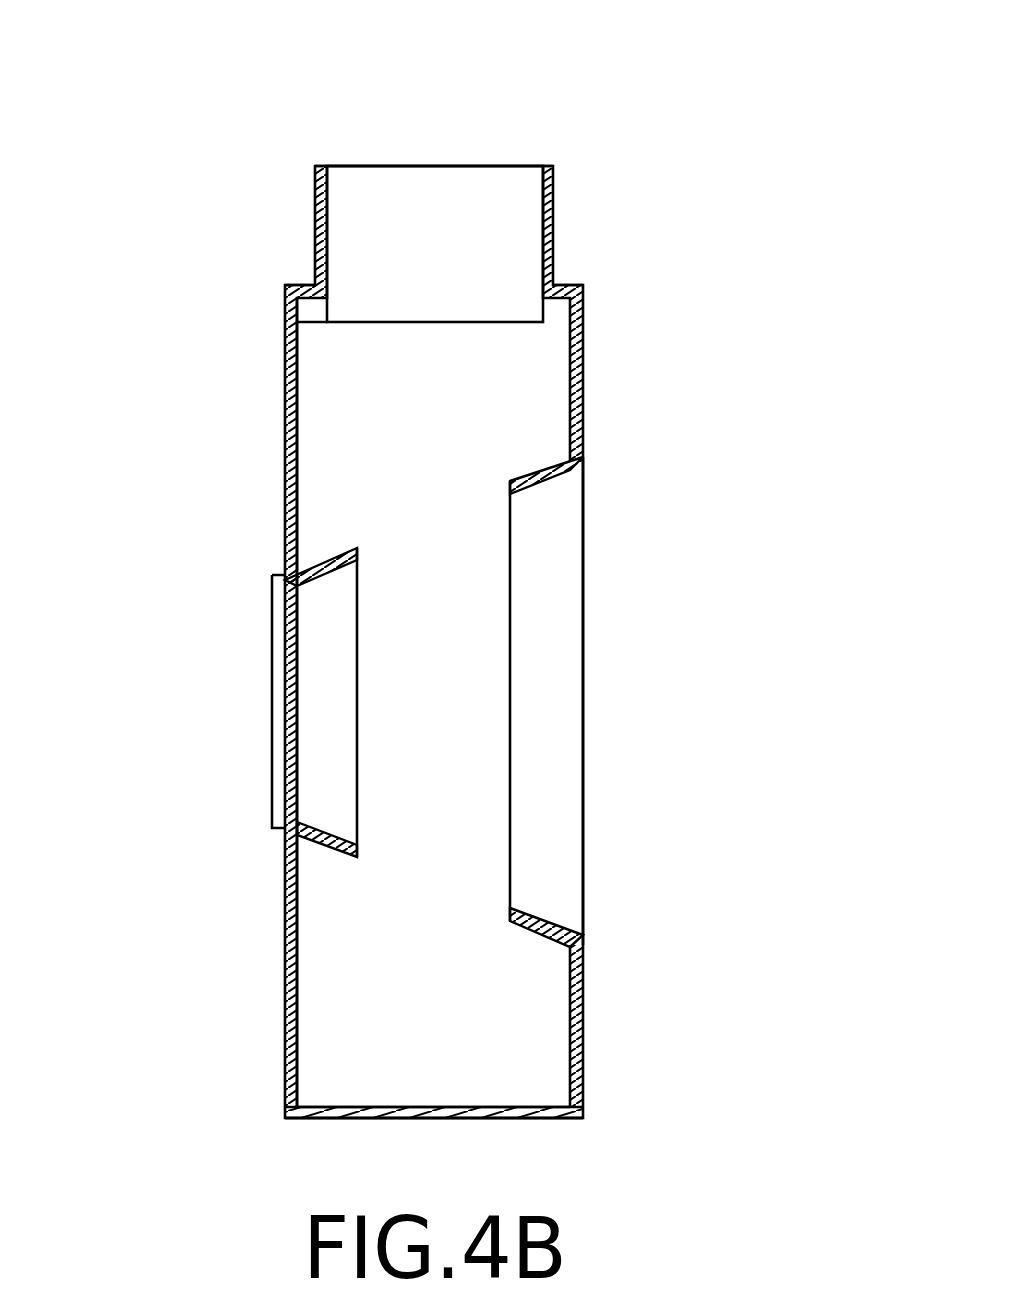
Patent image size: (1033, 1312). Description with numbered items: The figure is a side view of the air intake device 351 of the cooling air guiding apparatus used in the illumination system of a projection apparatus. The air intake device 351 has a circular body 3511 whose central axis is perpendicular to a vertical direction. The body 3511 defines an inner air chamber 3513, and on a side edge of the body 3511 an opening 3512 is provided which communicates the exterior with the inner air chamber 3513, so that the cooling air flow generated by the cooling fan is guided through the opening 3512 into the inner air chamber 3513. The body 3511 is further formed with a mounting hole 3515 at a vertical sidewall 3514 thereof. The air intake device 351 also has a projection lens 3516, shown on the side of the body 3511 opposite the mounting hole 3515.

The air intake device 351 is at (612, 94).
The body 3511 is at (565, 287).
The opening 3512 is at (445, 212).
The inner air chamber 3513 is at (448, 449).
The vertical sidewall 3514 is at (583, 1055).
The mounting hole 3515 is at (567, 710).
The projection lens 3516 is at (282, 703).